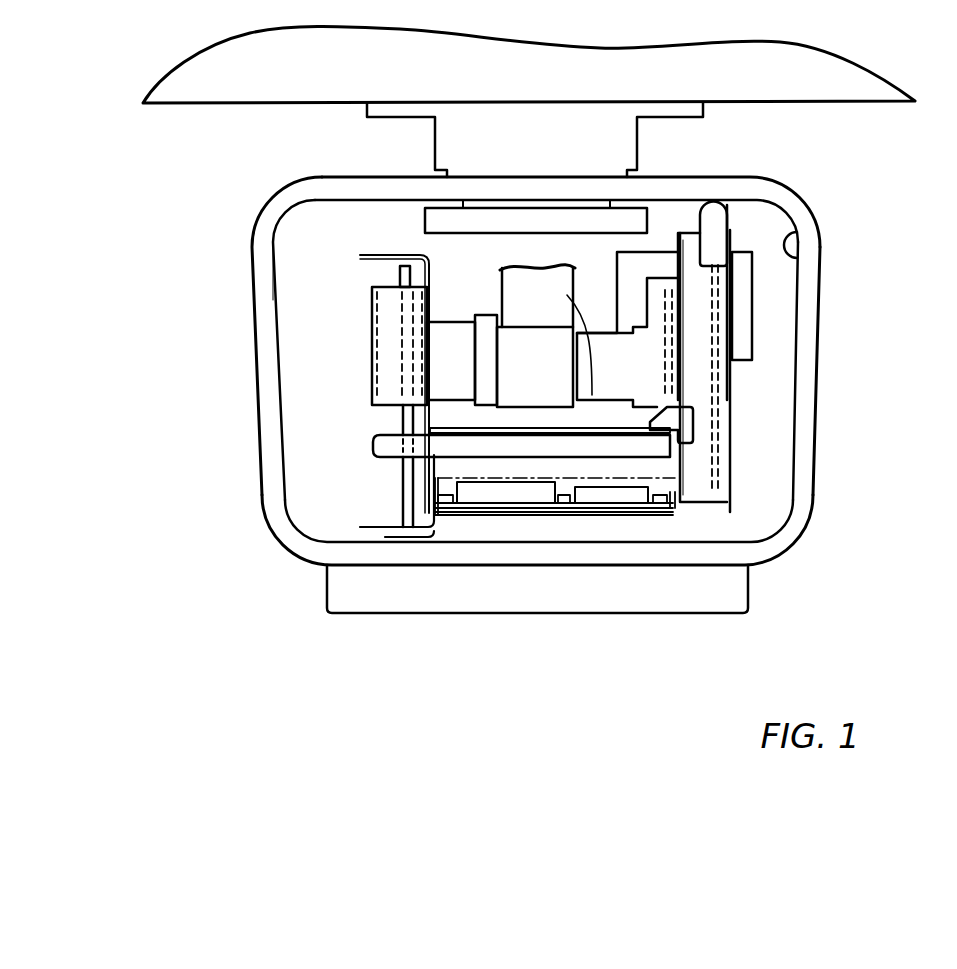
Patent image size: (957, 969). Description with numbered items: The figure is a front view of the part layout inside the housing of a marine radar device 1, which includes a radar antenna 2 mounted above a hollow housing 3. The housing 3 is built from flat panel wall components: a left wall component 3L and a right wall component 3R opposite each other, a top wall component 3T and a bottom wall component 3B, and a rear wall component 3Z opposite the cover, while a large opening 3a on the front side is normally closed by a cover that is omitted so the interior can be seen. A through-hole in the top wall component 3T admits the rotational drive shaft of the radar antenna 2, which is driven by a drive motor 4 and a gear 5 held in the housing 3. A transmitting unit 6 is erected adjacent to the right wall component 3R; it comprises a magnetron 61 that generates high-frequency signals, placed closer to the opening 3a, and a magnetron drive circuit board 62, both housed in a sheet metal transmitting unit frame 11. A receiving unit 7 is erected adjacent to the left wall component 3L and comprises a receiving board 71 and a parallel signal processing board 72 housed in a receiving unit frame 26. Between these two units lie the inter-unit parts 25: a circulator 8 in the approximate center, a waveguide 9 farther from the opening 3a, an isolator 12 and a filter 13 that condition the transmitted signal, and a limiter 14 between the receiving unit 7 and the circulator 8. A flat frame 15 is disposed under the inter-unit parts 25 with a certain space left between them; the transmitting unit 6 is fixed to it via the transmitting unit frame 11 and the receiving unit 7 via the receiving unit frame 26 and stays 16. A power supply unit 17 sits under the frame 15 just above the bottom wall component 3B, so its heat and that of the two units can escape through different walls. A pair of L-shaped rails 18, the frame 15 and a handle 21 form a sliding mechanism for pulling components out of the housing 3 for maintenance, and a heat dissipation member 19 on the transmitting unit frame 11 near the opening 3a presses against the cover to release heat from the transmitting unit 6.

The radar device 1 is at (90, 122).
The radar antenna 2 is at (858, 104).
The housing 3 is at (240, 208).
The rear wall component 3Z is at (350, 228).
The top wall component 3T is at (740, 187).
The opening 3a is at (803, 255).
The right wall component 3R is at (277, 493).
The left wall component 3L is at (797, 490).
The bottom wall component 3B is at (692, 568).
The drive motor 4 is at (663, 250).
The gear 5 is at (425, 218).
The transmitting unit 6 is at (305, 380).
The receiving unit 7 is at (777, 360).
The circulator 8 is at (540, 393).
The waveguide 9 is at (587, 382).
The transmitting unit frame 11 is at (360, 258).
The isolator 12 is at (448, 397).
The filter 13 is at (487, 390).
The limiter 14 is at (597, 392).
The frame 15 is at (440, 432).
The stays 16 is at (687, 420).
The power supply unit 17 is at (607, 447).
The rails 18 is at (403, 537).
The heat dissipation member 19 is at (306, 396).
The handle 21 is at (558, 565).
The inter-unit parts 25 is at (536, 504).
The receiving unit frame 26 is at (697, 288).
The magnetron 61 is at (372, 360).
The magnetron drive circuit board 62 is at (400, 275).
The receiving board 71 is at (668, 365).
The signal processing board 72 is at (710, 313).